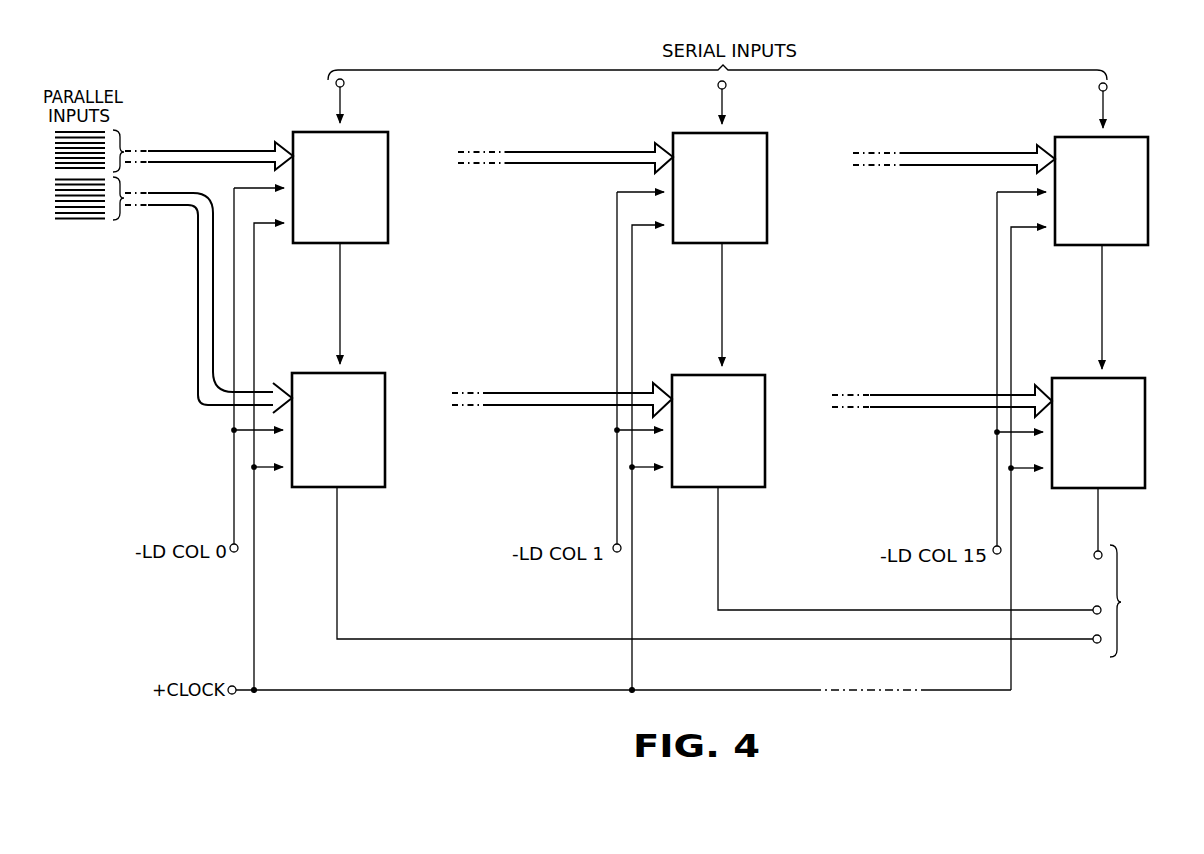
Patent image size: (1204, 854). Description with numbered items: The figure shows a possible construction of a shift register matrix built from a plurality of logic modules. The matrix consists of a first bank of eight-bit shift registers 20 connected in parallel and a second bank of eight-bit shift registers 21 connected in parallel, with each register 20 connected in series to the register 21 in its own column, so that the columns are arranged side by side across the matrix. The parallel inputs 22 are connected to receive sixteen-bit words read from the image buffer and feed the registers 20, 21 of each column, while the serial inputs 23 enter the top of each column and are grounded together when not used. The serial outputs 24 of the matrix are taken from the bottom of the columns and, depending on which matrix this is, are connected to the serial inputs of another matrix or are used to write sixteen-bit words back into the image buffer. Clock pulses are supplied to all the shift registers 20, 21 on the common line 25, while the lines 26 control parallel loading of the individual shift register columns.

The shift register 20 is at (377, 145).
The shift register 21 is at (378, 378).
The parallel inputs 22 is at (190, 150).
The serial input line 23 is at (337, 106).
The serial outputs 24 is at (767, 572).
The clock line 25 is at (297, 690).
The load control lines 26 is at (234, 470).